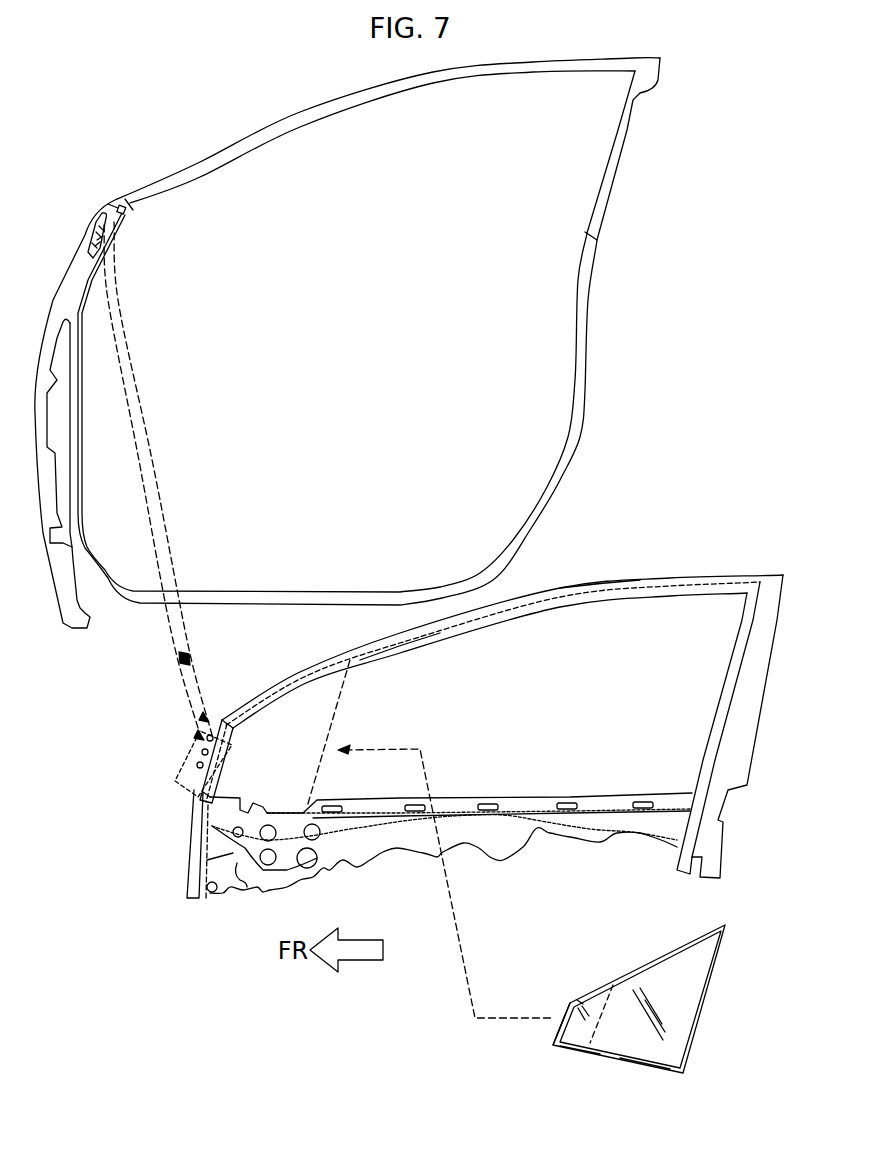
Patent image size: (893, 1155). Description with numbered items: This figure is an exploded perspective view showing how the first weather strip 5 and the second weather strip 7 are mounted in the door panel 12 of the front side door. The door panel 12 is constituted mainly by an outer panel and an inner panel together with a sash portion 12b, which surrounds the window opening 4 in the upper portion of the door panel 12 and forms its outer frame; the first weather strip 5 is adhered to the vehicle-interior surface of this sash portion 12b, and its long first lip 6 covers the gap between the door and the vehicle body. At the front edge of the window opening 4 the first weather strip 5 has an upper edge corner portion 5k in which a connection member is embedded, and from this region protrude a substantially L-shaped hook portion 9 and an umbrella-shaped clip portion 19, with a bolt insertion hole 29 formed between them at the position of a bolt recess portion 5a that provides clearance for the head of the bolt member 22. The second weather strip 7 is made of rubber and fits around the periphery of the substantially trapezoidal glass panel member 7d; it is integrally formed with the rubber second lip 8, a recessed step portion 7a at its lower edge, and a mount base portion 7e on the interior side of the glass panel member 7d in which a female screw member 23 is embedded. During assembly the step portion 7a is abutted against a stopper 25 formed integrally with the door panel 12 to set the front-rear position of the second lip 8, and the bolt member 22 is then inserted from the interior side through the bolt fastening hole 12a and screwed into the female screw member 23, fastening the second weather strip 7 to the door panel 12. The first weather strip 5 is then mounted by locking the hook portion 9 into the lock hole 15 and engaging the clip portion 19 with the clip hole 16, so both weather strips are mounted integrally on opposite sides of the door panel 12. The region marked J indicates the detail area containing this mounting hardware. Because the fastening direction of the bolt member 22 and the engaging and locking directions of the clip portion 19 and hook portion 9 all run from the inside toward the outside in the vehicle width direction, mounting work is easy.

The first weather strip 5 is at (270, 113).
The upper edge corner portion 5k is at (107, 208).
The first lip 6 is at (90, 220).
The bolt recess portion 5a is at (97, 240).
The hook portion 9 is at (95, 252).
The clip portion 19 is at (125, 212).
The bolt member 22 is at (185, 658).
The door panel 12 is at (648, 572).
The window opening 4 is at (497, 627).
The sash portion 12b is at (367, 662).
The second weather strip 7 is at (337, 722).
The clip hole 16 is at (214, 738).
The bolt fastening hole 12a is at (209, 752).
The lock hole 15 is at (204, 765).
The bolt insertion hole 29 is at (198, 763).
The stopper 25 is at (195, 790).
The detail region J is at (460, 935).
The female screw member 23 is at (580, 1002).
The second lip 8 is at (569, 1012).
The mount base portion 7e is at (560, 1028).
The step portion 7a is at (582, 1056).
The glass panel member 7d is at (637, 1037).